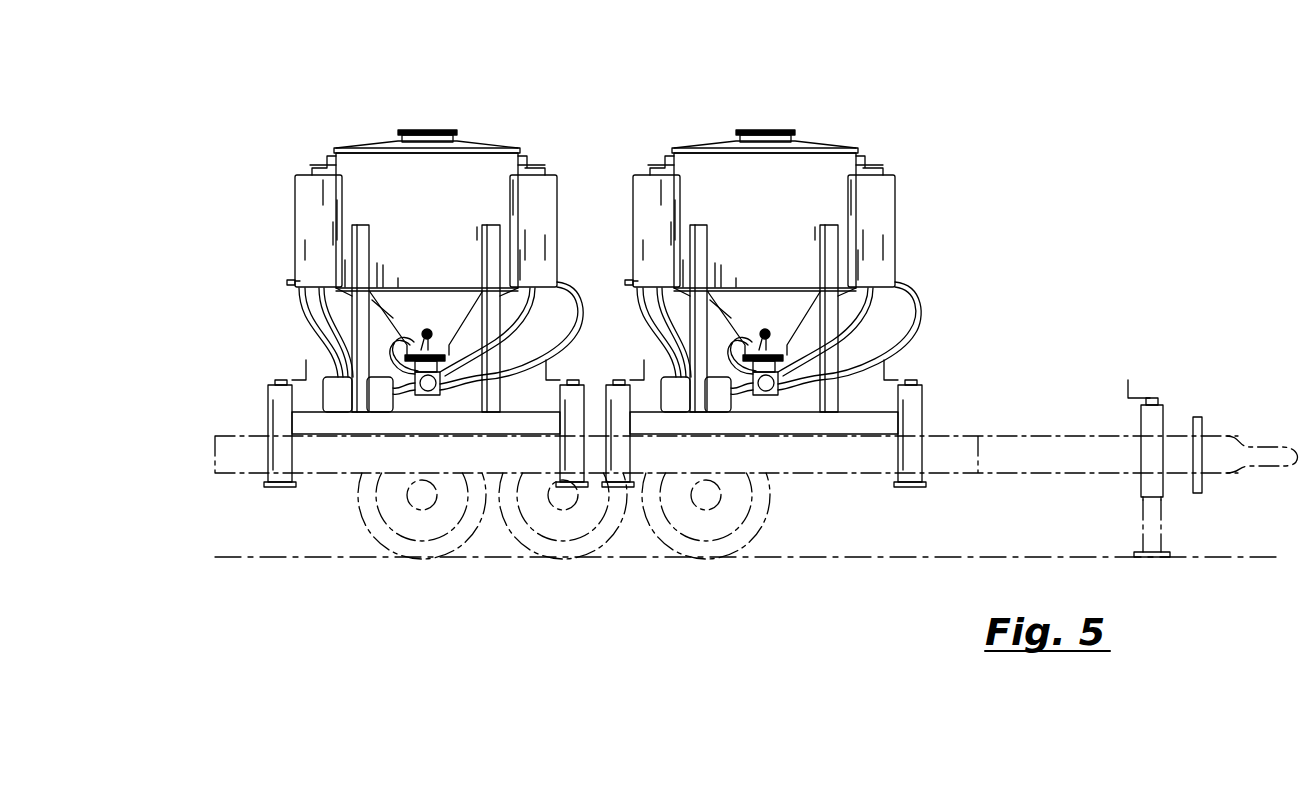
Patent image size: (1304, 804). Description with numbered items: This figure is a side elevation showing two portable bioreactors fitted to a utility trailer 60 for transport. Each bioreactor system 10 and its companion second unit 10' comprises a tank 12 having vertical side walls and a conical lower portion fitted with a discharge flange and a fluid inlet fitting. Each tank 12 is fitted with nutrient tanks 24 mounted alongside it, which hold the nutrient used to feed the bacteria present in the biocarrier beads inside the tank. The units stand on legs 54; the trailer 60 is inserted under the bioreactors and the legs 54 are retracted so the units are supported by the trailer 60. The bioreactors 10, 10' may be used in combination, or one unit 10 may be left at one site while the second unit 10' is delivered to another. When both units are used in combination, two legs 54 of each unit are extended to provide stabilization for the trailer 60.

The bioreactor system 10 is at (437, 233).
The second bioreactor unit 10' is at (775, 233).
The tank 12 is at (436, 211).
The nutrient tank 24 is at (328, 246).
The legs 54 is at (280, 407).
The utility trailer 60 is at (978, 436).